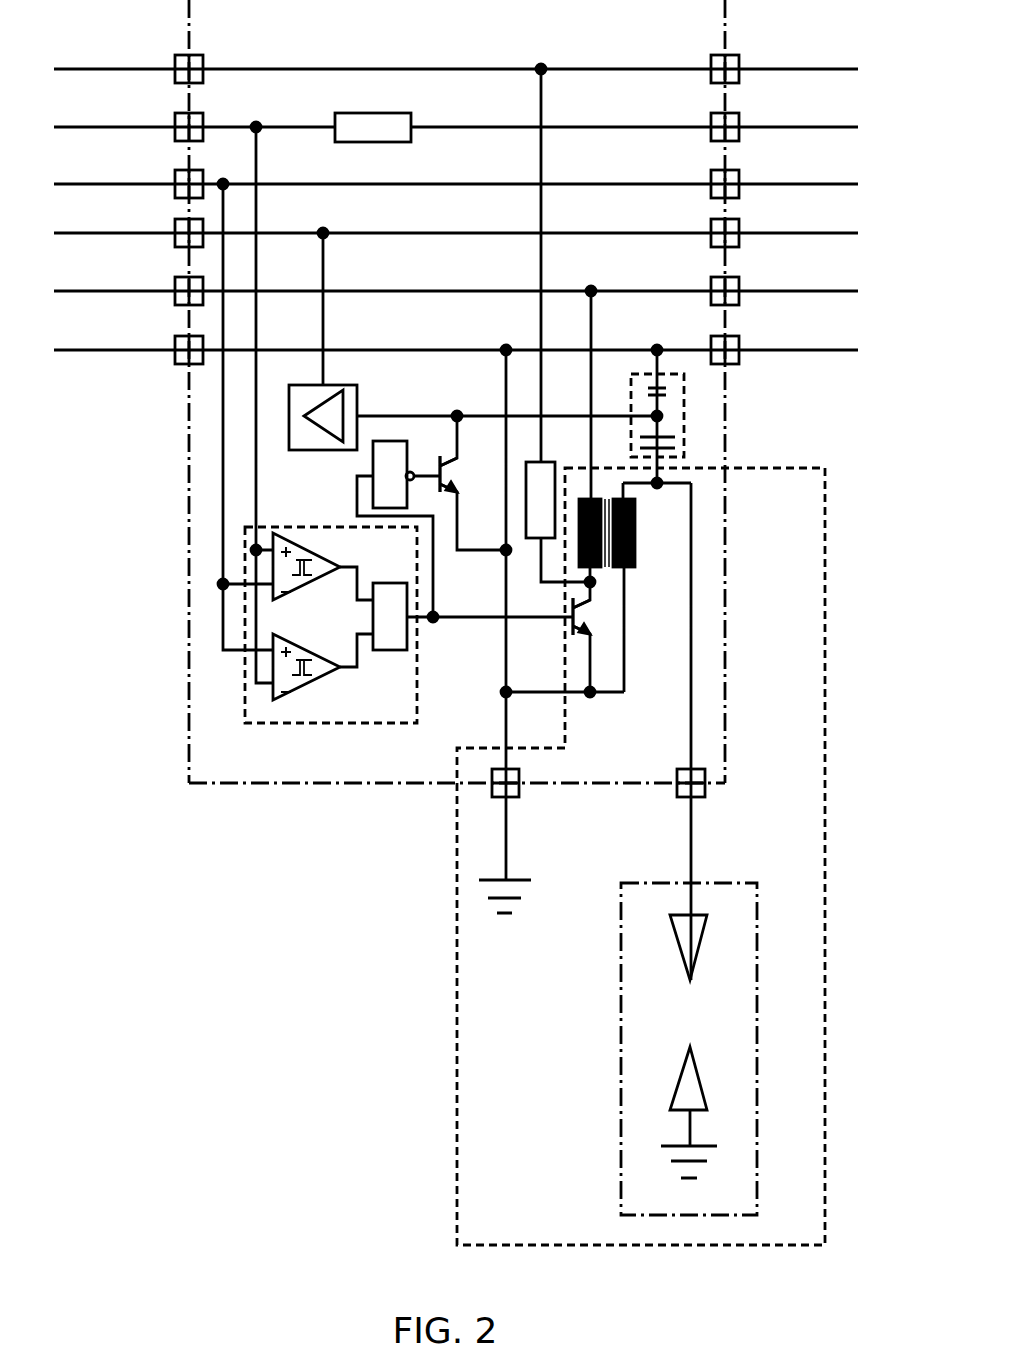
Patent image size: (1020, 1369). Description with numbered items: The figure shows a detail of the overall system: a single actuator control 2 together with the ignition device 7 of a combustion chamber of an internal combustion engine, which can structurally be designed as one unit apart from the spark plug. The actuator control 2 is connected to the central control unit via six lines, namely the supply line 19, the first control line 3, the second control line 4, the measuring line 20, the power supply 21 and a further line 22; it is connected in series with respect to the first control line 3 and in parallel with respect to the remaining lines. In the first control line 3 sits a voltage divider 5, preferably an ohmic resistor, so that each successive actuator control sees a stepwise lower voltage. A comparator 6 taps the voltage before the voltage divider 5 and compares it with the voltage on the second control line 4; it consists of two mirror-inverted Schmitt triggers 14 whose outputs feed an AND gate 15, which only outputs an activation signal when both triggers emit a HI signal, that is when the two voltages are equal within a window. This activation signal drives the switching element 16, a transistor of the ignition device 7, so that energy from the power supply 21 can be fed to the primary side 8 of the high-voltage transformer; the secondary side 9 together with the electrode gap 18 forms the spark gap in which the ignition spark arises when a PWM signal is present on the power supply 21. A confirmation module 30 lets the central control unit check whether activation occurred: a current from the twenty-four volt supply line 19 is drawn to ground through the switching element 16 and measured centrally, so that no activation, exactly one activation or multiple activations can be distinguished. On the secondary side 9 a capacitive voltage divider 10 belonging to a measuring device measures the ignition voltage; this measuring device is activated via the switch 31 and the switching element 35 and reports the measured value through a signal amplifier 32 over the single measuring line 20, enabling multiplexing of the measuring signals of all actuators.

The actuator control 2 is at (189, 478).
The first control line 3 is at (797, 127).
The second control line 4 is at (797, 184).
The voltage divider 5 is at (373, 127).
The comparator 6 is at (245, 619).
The ignition device 7 is at (826, 760).
The primary side 8 is at (573, 455).
The secondary side 9 is at (612, 455).
The voltage divider 10 is at (684, 420).
The Schmitt trigger 14 is at (280, 560).
The AND gate 15 is at (393, 650).
The switching element 16 is at (603, 617).
The electrode gap 18 is at (672, 998).
The supply line 19 is at (797, 69).
The measuring line 20 is at (797, 233).
The power supply 21 is at (797, 291).
The line 22 is at (797, 350).
The confirmation module 30 is at (526, 478).
The switch 31 is at (390, 441).
The signal amplifier 32 is at (289, 393).
The switching element 35 is at (441, 440).